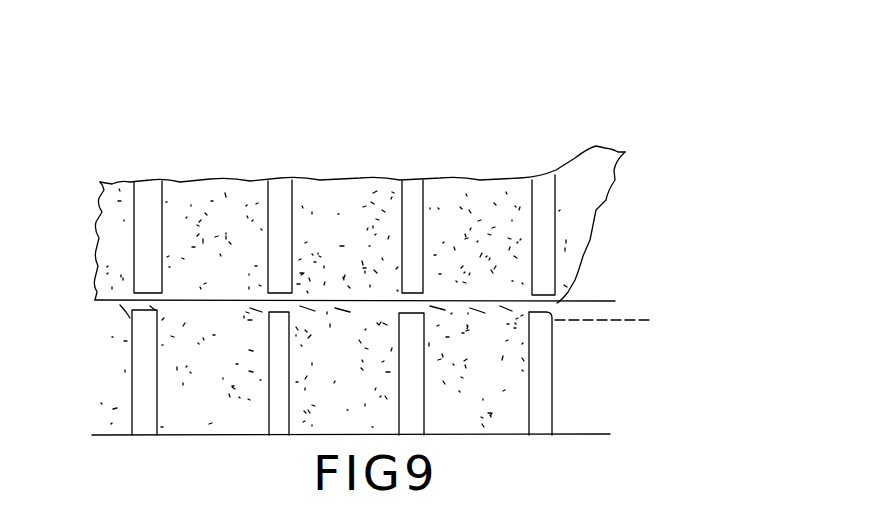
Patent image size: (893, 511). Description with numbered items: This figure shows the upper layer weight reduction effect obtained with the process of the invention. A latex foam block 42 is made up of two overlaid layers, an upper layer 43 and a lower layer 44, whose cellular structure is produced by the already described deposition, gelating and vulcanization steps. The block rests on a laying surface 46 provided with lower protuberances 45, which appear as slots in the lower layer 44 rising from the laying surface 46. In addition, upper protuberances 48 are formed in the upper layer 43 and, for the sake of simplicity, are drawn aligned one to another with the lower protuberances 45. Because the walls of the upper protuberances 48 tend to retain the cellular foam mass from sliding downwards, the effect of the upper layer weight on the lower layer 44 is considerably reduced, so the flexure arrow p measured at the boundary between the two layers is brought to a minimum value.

The foam block 42 is at (268, 148).
The upper protuberances 48 is at (548, 240).
The upper layer 43 is at (573, 208).
The lower layer 44 is at (490, 375).
The lower protuberances 45 is at (415, 425).
The laying surface 46 is at (227, 435).